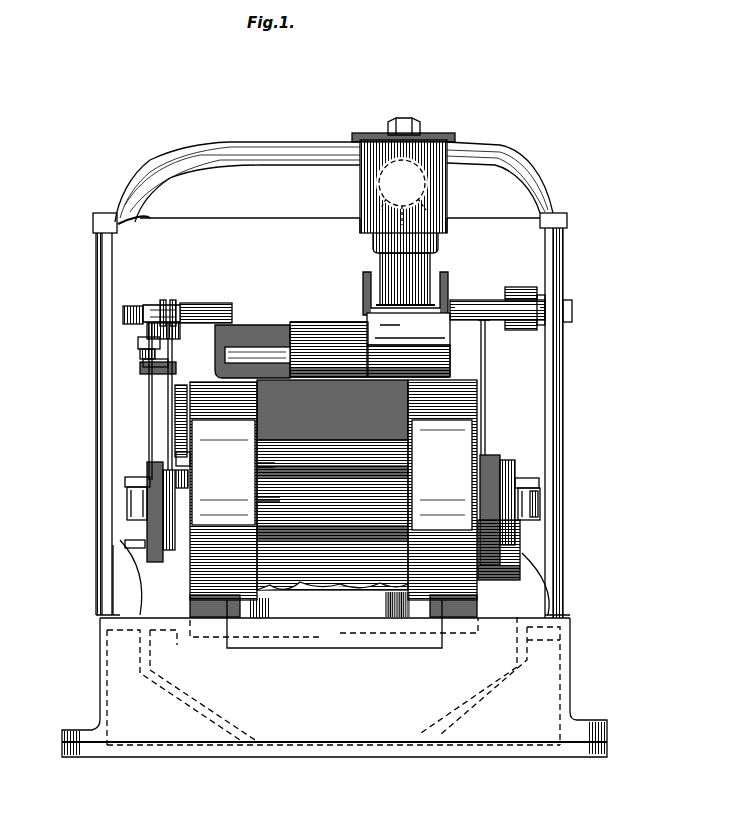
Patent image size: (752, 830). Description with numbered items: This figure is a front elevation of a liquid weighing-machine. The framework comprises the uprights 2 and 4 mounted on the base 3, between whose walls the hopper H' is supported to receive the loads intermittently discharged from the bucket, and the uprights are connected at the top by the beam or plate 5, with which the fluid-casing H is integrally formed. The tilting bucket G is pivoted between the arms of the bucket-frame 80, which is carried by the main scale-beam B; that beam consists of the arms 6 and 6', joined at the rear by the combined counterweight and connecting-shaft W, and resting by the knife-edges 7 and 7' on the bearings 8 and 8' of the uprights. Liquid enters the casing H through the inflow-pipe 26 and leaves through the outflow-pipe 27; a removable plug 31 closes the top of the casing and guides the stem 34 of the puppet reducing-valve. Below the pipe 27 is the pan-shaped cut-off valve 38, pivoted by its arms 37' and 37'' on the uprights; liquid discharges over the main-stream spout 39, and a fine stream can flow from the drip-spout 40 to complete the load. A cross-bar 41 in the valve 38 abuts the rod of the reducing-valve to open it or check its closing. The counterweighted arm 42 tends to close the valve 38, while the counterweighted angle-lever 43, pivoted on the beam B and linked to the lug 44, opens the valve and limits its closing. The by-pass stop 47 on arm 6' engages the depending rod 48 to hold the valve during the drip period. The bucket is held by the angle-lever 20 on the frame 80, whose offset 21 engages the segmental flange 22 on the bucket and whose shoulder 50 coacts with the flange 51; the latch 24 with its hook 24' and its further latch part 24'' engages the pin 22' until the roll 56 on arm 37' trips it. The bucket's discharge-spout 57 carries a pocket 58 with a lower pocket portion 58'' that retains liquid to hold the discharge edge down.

The upright 2 is at (105, 417).
The base 3 is at (102, 655).
The upright 4 is at (560, 398).
The beam or plate 5 is at (330, 187).
The arm 6 is at (121, 512).
The arm 6' is at (556, 499).
The pivot or knife-edge 7 is at (136, 467).
The pivot or knife-edge 7' is at (527, 470).
The bearing 8 is at (107, 500).
The bearing 8' is at (549, 489).
The counterweighted angle-lever 20 is at (170, 428).
The offset detent 21 is at (183, 460).
The detent 22 is at (152, 420).
The pin 22' is at (131, 302).
The bucket-latch 24 is at (111, 341).
The hook 24' is at (110, 360).
The bracket part 24'' is at (116, 372).
The inflow conduit or pipe 26 is at (395, 162).
The outflow-pipe 27 is at (433, 267).
The screw-threaded plug 31 is at (422, 139).
The stem 34 is at (417, 317).
The arm 37' is at (187, 295).
The arm 37'' is at (497, 293).
The valve 38 is at (338, 330).
The main-stream valve-spout 39 is at (282, 347).
The drip-spout 40 is at (223, 378).
The cross-bar 41 is at (433, 310).
The counterweighted arm 42 is at (540, 288).
The shiftable counterweighted lever 43 is at (148, 433).
The lug or ear 44 is at (180, 332).
The by-pass stop 47 is at (490, 457).
The depending rod 48 is at (488, 390).
The supplemental stop 50 is at (163, 328).
The flange 51 is at (173, 328).
The antifriction-roll 56 is at (145, 371).
The discharge-spout 57 is at (257, 443).
The pocket 58 is at (251, 493).
The cylinder band 58'' is at (248, 462).
The bucket-frame or yoke 80 is at (187, 480).
The main scale-beam B is at (128, 550).
The bucket G is at (442, 498).
The fluid-casing H is at (400, 185).
The hopper H' is at (156, 716).
The combined counterweight and connecting-shaft W is at (502, 550).